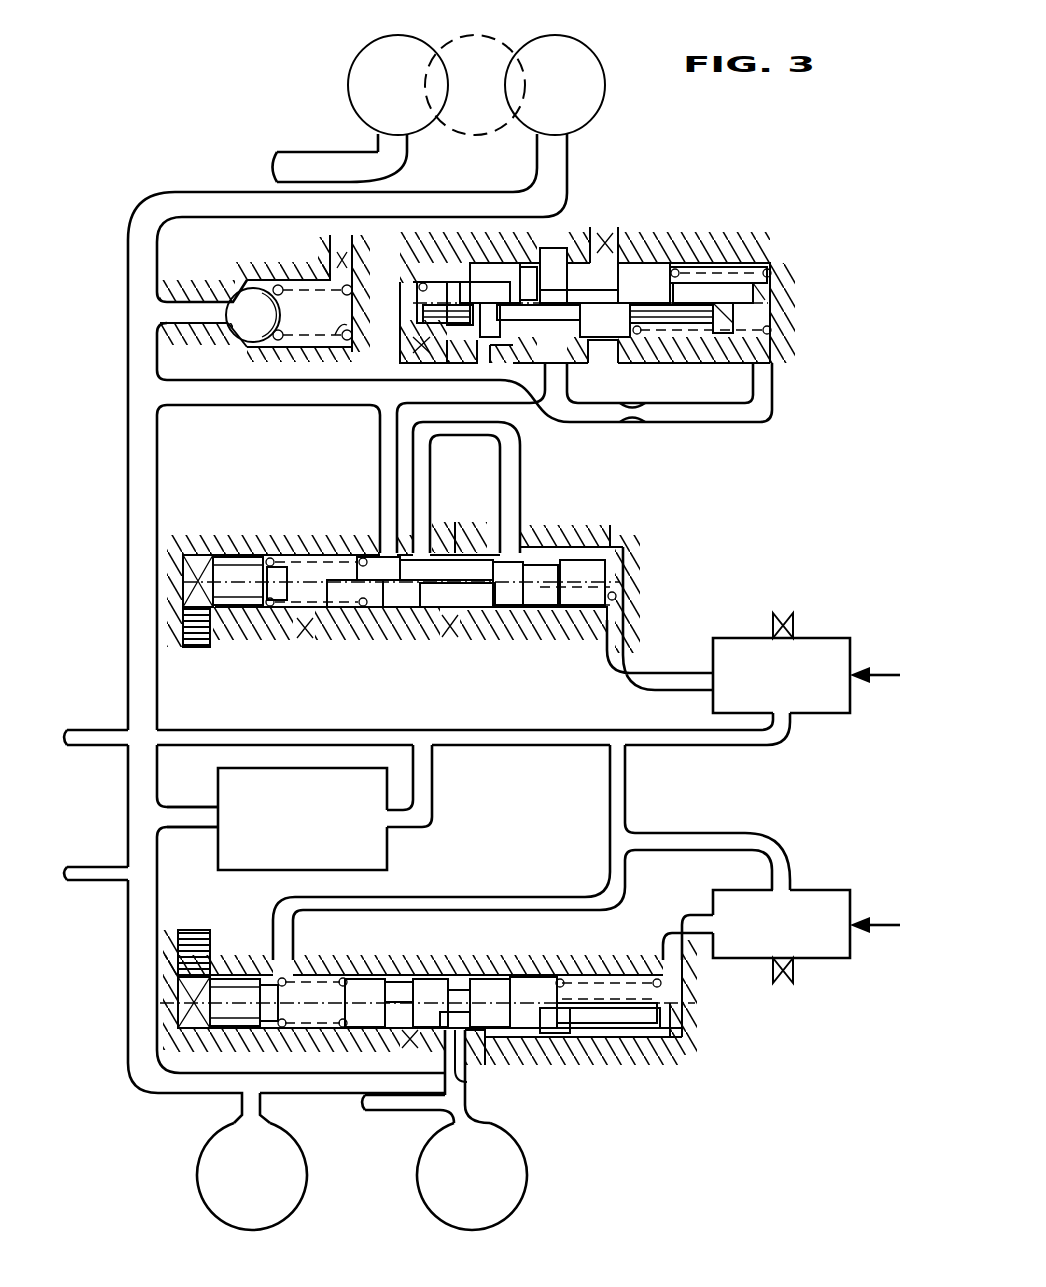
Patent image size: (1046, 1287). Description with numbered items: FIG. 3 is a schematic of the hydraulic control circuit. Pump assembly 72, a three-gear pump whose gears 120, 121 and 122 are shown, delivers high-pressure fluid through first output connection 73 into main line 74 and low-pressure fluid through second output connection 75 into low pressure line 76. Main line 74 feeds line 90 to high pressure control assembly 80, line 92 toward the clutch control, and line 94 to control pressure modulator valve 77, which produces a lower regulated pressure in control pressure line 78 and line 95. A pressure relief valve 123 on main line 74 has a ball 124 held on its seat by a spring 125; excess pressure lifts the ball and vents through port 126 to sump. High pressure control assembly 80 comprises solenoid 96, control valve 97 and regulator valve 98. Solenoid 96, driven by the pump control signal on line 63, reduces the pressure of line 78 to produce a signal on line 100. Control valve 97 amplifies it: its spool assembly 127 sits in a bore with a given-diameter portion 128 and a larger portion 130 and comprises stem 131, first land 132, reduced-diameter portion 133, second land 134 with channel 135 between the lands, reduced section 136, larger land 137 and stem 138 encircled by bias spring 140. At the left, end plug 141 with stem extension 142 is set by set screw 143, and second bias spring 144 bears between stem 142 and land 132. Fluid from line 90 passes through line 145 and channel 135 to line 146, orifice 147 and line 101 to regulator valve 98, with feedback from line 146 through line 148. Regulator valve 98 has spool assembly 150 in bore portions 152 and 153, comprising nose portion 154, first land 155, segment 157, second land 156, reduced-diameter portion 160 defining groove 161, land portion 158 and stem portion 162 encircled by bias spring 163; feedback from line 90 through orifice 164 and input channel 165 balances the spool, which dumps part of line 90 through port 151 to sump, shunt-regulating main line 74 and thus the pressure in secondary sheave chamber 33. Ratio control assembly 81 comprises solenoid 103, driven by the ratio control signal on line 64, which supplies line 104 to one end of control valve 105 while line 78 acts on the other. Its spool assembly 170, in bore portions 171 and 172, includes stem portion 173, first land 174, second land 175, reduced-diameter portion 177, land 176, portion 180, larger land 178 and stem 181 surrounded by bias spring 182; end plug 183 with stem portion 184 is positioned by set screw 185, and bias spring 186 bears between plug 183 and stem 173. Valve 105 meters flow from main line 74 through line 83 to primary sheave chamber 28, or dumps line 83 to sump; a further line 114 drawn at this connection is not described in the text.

The pump assembly 72 is at (318, 53).
The pump gear 122 is at (352, 100).
The pump gear 120 is at (603, 108).
The pump gear 121 is at (440, 72).
The second output connection 75 is at (405, 145).
The first output connection 73 is at (572, 146).
The low pressure line 76 is at (280, 152).
The main line 74 is at (128, 270).
The line 95 is at (105, 747).
The line 92 is at (105, 882).
The control pressure line 78 is at (532, 730).
The line 94 is at (195, 825).
The control pressure modulator valve 77 is at (325, 808).
The high pressure control assembly 80 is at (836, 368).
The regulator valve 98 is at (600, 299).
The second, reduced-diameter bore portion 153 is at (422, 282).
The small nose portion 154 is at (410, 305).
The first land 155 is at (490, 262).
The groove 161 is at (557, 284).
The port 151 is at (625, 250).
The spool assembly 150 is at (665, 262).
The first bore portion 152 is at (760, 262).
The segment 157 is at (455, 345).
The second land 156 is at (495, 340).
The input channel 165 is at (452, 365).
The orifice 164 is at (507, 365).
The reduced-diameter portion 160 is at (578, 365).
The land portion 158 is at (625, 357).
The stem portion 162 is at (690, 365).
The bias spring 163 is at (745, 340).
The pressure relief valve 123 is at (306, 265).
The ball 124 is at (240, 330).
The spring 125 is at (352, 335).
The port 126 is at (350, 248).
The line 101 is at (775, 405).
The line 146 is at (598, 420).
The orifice 147 is at (634, 408).
The line 90 is at (300, 407).
The line 145 is at (380, 448).
The line 148 is at (455, 490).
The control valve 97 is at (423, 596).
The first bore portion 128 is at (198, 555).
The set screw 143 is at (197, 647).
The end plug 141 is at (240, 560).
The stem extension 142 is at (275, 612).
The second bias spring 144 is at (295, 558).
The first land 132 is at (365, 555).
The stem 131 is at (308, 622).
The spool assembly 127 is at (370, 612).
The reduced-diameter portion 133 is at (400, 612).
The second land 134 is at (480, 612).
The channel 135 is at (455, 538).
The reduced section 136 is at (527, 545).
The land 137 is at (570, 545).
The second, larger-diameter bore portion 130 is at (615, 540).
The stem 138 is at (570, 612).
The bias spring 140 is at (625, 548).
The line 100 is at (648, 675).
The solenoid 96 is at (781, 663).
The line 63 is at (870, 672).
The ratio control assembly 81 is at (530, 943).
The line 104 is at (697, 902).
The solenoid 103 is at (737, 864).
The line 64 is at (880, 912).
The control valve 105 is at (450, 1001).
The set screw 185 is at (192, 930).
The first bore portion 171 is at (185, 1030).
The end plug 183 is at (240, 977).
The stem portion 184 is at (283, 1005).
The bias spring 186 is at (300, 977).
The stem portion 173 is at (345, 977).
The first land 174 is at (395, 977).
The second land 175 is at (440, 977).
The reduced-diameter portion 177 is at (452, 990).
The land 176 is at (480, 977).
The spool assembly 170 is at (525, 975).
The stem 181 is at (590, 977).
The land 178 is at (562, 1035).
The second, larger-diameter bore portion 172 is at (612, 1040).
The bias spring 182 is at (690, 1030).
The portion 180 is at (520, 1060).
The line 83 is at (470, 1100).
The pressure line 114 is at (392, 1110).
The secondary sheave chamber 33 is at (298, 1210).
The primary sheave chamber 28 is at (518, 1210).